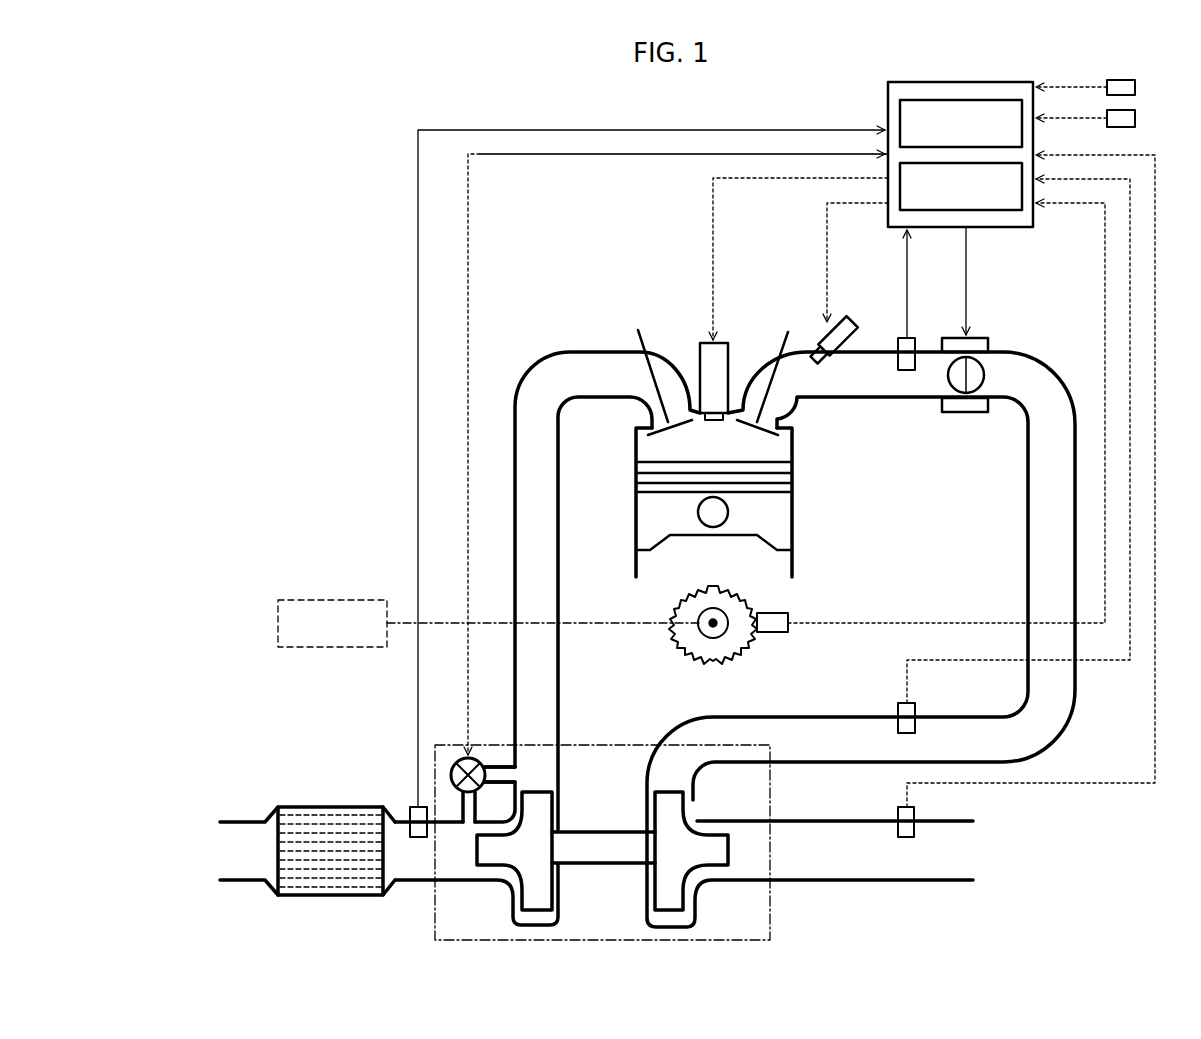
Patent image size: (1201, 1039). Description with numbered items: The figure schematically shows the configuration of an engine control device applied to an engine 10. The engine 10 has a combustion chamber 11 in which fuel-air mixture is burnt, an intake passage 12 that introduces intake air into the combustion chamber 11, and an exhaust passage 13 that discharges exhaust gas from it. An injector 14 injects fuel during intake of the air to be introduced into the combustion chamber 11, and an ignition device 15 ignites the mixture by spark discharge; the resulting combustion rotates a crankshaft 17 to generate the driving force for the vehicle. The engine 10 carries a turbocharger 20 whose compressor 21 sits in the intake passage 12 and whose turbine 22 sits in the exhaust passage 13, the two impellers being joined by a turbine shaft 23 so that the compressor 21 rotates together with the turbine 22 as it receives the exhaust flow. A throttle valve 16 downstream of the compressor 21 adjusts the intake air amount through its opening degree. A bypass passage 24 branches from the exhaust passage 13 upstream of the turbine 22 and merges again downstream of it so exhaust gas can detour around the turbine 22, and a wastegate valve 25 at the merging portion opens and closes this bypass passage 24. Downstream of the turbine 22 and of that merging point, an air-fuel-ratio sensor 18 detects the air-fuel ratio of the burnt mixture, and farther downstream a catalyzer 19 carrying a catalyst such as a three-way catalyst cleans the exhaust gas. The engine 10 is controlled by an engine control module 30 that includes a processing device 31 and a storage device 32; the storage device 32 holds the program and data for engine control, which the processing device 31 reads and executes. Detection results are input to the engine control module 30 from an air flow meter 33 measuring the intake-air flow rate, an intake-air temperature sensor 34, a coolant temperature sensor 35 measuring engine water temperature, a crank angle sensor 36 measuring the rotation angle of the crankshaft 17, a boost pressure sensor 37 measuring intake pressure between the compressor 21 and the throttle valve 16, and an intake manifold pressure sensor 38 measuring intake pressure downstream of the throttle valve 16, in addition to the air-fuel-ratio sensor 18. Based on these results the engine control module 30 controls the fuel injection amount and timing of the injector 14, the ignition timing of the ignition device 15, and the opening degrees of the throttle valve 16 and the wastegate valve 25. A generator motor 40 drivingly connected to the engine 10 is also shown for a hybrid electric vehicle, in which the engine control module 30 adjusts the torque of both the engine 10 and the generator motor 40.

The engine 10 is at (553, 310).
The combustion chamber 11 is at (728, 453).
The intake passage 12 is at (1032, 582).
The exhaust passage 13 is at (560, 583).
The injector 14 is at (820, 333).
The ignition device 15 is at (723, 357).
The throttle valve 16 is at (983, 375).
The crankshaft 17 is at (697, 630).
The air-fuel-ratio sensor 18 is at (420, 838).
The catalyzer 19 is at (330, 818).
The turbocharger 20 is at (643, 842).
The compressor 21 is at (683, 880).
The turbine 22 is at (520, 880).
The turbine shaft 23 is at (600, 842).
The bypass passage 24 is at (493, 766).
The wastegate valve 25 is at (466, 755).
The engine control module 30 is at (750, 189).
The processing device 31 is at (1000, 100).
The storage device 32 is at (1000, 210).
The air flow meter 33 is at (898, 833).
The intake-air temperature sensor 34 is at (1135, 87).
The coolant temperature sensor 35 is at (1135, 118).
The crank angle sensor 36 is at (775, 633).
The boost pressure sensor 37 is at (898, 725).
The intake manifold pressure sensor 38 is at (897, 357).
The generator motor 40 is at (338, 650).